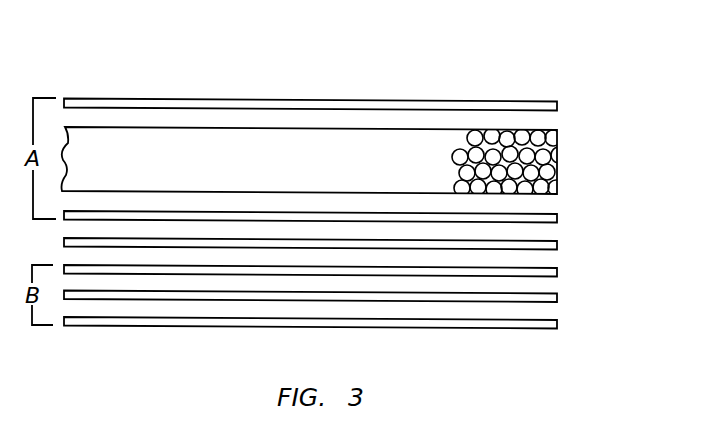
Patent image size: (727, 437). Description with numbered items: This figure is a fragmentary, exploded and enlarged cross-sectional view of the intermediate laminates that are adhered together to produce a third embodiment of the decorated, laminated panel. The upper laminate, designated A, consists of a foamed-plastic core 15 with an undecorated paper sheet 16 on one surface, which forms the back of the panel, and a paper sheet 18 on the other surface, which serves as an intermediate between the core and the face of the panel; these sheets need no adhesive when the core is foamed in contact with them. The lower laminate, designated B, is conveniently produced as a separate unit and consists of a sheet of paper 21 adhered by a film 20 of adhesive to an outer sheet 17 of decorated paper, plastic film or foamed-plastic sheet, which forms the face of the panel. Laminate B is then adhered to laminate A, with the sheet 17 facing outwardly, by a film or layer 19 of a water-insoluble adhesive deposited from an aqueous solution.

The foamed-plastic core 15 is at (557, 163).
The undecorated paper sheet 16 is at (557, 106).
The outer sheet 17 is at (557, 323).
The paper sheet 18 is at (557, 218).
The adhesive layer 19 is at (557, 246).
The adhesive film 20 is at (557, 297).
The paper sheet 21 is at (557, 272).